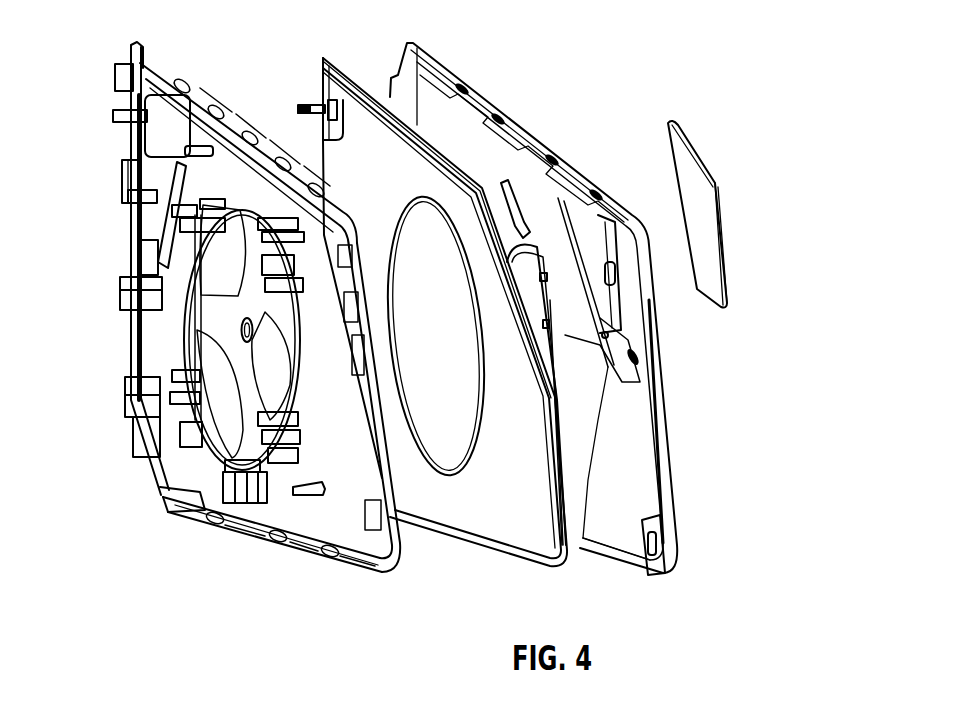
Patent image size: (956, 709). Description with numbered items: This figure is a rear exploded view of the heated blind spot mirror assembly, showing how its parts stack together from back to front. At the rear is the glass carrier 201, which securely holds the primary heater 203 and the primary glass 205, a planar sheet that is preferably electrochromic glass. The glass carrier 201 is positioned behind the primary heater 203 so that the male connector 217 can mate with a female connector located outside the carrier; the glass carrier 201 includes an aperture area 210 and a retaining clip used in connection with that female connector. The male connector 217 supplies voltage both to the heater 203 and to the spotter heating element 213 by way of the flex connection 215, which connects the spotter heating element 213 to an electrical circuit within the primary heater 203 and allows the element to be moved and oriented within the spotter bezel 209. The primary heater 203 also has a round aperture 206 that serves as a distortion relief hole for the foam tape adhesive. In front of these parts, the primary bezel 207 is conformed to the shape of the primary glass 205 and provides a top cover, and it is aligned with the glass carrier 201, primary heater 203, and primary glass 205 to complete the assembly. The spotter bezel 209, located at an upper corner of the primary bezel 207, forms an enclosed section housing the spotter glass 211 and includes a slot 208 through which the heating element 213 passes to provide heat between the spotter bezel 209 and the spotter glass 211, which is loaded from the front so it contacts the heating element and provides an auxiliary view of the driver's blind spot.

The glass carrier 201 is at (197, 85).
The primary heater 203 is at (350, 148).
The primary glass 205 is at (348, 63).
The round aperture 206 is at (450, 432).
The primary bezel 207 is at (520, 102).
The slot 208 is at (603, 252).
The spotter bezel 209 is at (580, 297).
The aperture area 210 is at (162, 132).
The spotter glass 211 is at (705, 155).
The spotter heating element 213 is at (528, 270).
The flex connection 215 is at (502, 192).
The male connector 217 is at (299, 103).